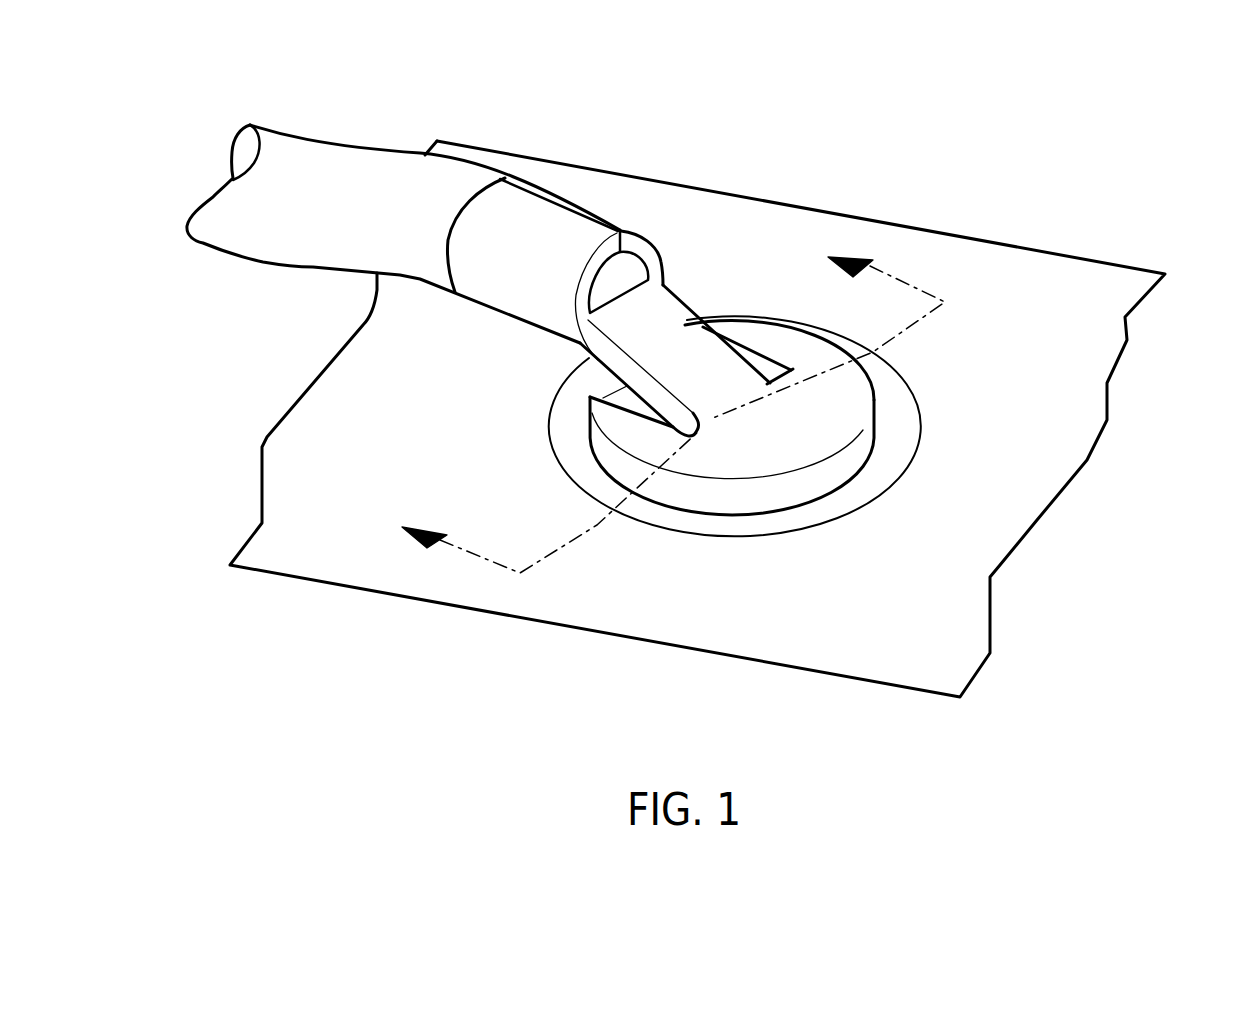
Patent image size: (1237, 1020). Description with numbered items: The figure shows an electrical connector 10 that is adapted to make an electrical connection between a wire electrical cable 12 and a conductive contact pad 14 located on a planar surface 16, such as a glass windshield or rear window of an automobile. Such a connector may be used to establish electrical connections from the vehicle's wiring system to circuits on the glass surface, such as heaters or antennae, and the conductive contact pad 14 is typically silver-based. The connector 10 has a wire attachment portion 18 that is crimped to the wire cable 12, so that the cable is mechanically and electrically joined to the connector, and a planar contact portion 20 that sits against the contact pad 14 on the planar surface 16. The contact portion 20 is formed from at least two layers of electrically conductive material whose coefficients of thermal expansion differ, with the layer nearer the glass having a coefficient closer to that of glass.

The electrical connector 10 is at (786, 162).
The wire electrical cable 12 is at (335, 165).
The conductive contact pad 14 is at (893, 420).
The planar surface 16 is at (1037, 283).
The wire attachment portion 18 is at (528, 224).
The planar contact portion 20 is at (787, 447).